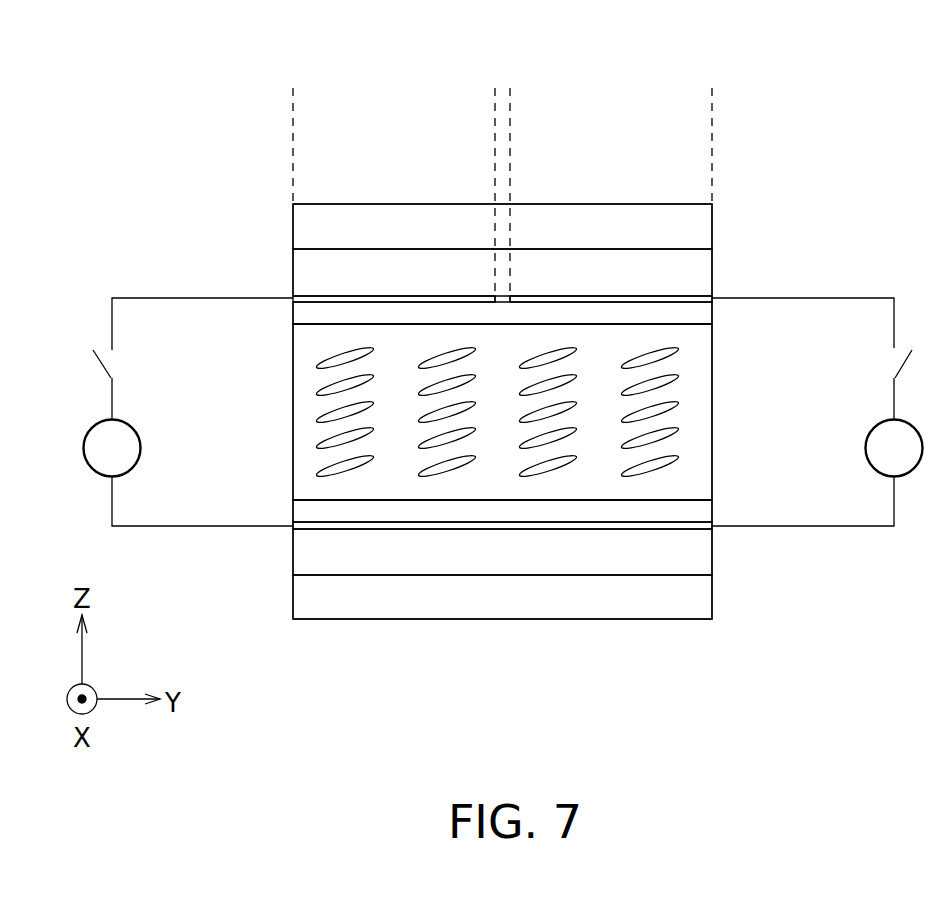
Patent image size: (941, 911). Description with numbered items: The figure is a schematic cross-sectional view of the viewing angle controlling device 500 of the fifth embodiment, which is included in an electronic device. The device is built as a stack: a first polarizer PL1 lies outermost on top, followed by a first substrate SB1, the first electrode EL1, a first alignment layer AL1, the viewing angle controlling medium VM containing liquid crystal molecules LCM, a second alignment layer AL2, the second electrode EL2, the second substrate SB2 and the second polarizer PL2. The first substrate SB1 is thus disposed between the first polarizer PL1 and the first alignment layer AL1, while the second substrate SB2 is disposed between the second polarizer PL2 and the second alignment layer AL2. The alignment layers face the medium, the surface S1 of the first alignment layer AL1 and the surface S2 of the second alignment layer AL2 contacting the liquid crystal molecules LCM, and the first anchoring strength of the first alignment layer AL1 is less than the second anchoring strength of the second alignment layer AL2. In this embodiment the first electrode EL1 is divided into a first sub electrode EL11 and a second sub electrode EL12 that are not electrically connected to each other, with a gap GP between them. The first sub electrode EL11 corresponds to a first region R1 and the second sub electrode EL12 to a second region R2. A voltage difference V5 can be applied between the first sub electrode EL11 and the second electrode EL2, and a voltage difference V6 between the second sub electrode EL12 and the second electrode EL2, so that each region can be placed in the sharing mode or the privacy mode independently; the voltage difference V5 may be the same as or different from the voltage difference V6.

The viewing angle controlling device 500 is at (213, 70).
The first region R1 is at (293, 119).
The second region R2 is at (712, 119).
The first polarizer PL1 is at (707, 225).
The first substrate SB1 is at (707, 263).
The first electrode EL1 is at (502, 277).
The first sub electrode EL11 is at (300, 298).
The second sub electrode EL12 is at (710, 295).
The gap GP is at (502, 304).
The first alignment layer AL1 is at (707, 313).
The surface of the first alignment layer S1 is at (702, 324).
The viewing angle controlling medium VM is at (690, 351).
The liquid crystal molecules LCM is at (667, 408).
The surface of the second alignment layer S2 is at (702, 500).
The second alignment layer AL2 is at (706, 511).
The second electrode EL2 is at (707, 528).
The second substrate SB2 is at (707, 559).
The second polarizer PL2 is at (707, 598).
The voltage difference V5 is at (189, 412).
The voltage difference V6 is at (817, 412).